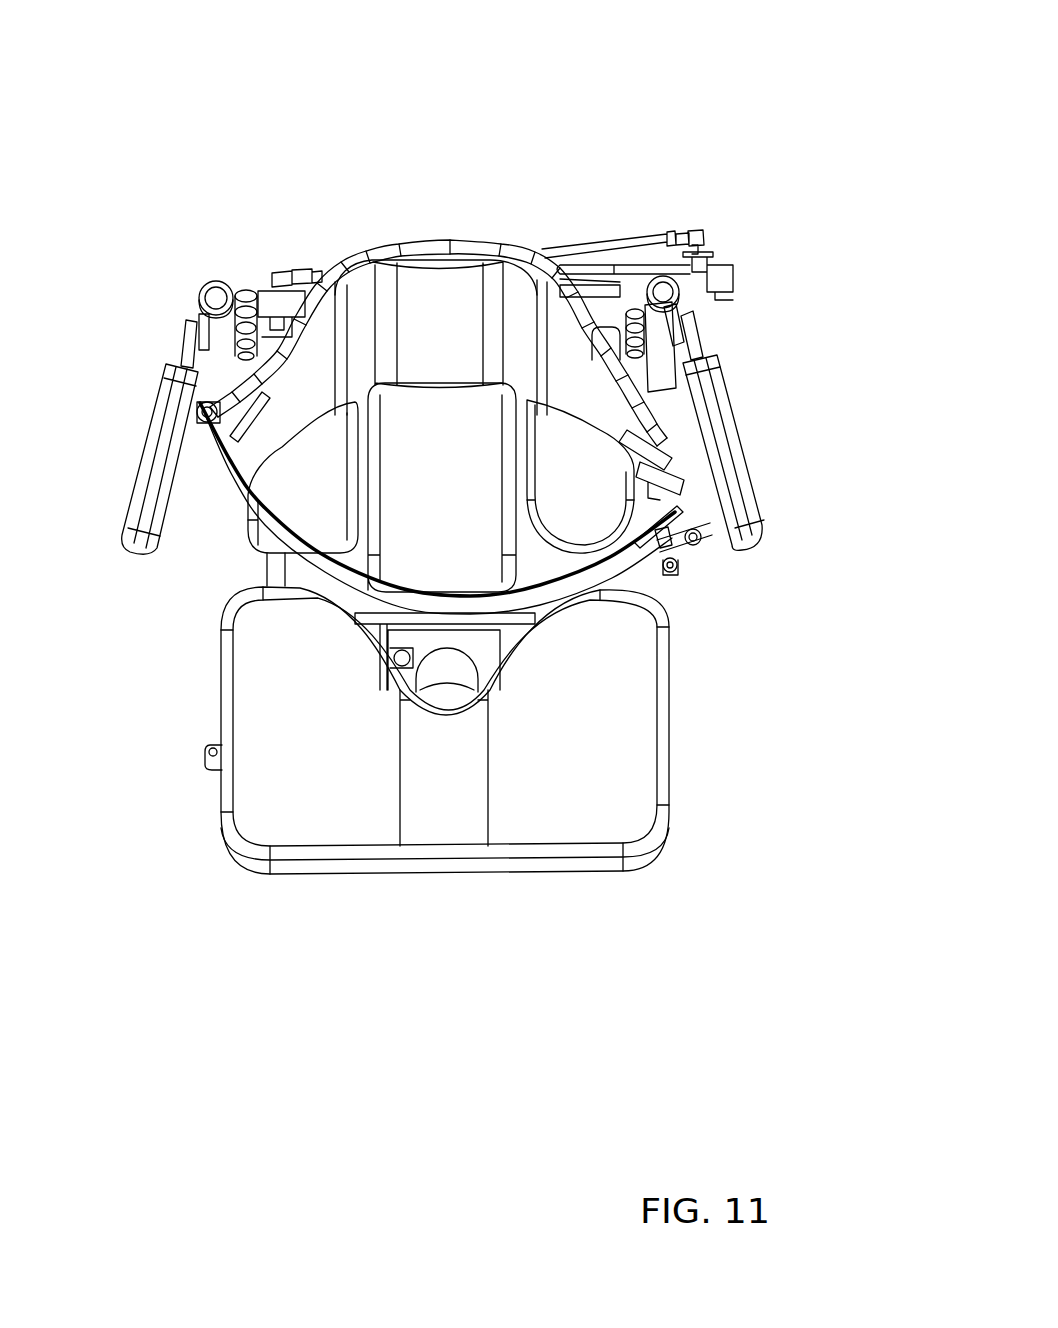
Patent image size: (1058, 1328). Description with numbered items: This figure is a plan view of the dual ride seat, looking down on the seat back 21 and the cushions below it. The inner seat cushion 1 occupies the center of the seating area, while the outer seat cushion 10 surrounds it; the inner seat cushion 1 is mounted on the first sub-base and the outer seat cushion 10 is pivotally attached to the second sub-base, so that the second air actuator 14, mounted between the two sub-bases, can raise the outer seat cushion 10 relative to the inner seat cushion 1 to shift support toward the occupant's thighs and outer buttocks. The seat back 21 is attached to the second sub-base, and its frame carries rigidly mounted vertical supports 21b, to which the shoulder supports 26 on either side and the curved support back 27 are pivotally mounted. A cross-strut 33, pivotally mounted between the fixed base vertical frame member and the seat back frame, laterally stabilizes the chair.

The inner seat cushion 1 is at (457, 447).
The outer seat cushion 10 is at (295, 490).
The second air actuator 14 is at (462, 673).
The seat back 21 is at (422, 242).
The vertical supports 21b is at (215, 284).
The shoulder supports 26 is at (144, 433).
The support back 27 is at (243, 525).
The cross-strut 33 is at (616, 242).